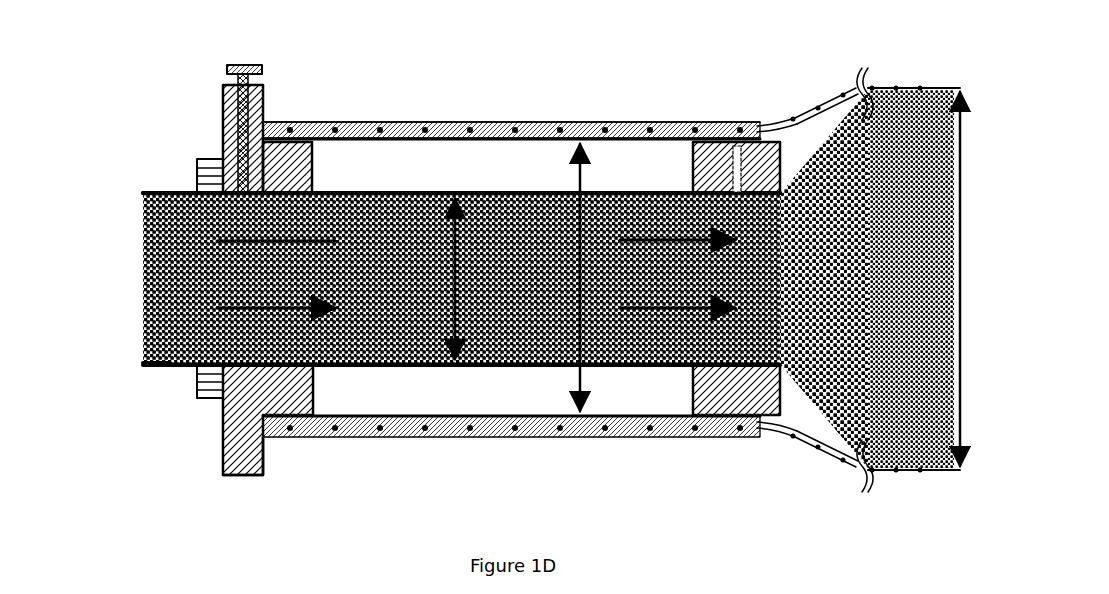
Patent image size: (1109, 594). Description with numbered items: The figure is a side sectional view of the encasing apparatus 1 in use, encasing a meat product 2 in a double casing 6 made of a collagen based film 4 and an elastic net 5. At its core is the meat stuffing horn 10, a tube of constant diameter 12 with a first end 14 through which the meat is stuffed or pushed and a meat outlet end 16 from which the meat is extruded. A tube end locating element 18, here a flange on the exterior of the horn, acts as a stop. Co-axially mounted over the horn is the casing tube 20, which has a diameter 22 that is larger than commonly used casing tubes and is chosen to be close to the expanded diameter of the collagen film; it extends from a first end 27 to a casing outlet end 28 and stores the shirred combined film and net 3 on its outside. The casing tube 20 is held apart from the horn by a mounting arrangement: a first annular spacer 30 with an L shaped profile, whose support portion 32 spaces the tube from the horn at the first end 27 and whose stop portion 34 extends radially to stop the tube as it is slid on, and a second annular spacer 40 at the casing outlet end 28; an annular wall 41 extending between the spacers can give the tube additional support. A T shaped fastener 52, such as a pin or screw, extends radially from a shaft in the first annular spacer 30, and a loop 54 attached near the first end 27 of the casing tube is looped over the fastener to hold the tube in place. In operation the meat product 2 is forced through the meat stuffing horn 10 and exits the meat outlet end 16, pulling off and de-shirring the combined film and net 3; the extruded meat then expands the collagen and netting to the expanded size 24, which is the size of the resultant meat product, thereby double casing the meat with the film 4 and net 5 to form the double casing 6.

The encasing apparatus 1 is at (138, 60).
The meat product 2 is at (140, 279).
The shirred combined film and net 3 is at (634, 119).
The film 4 is at (826, 103).
The net 5 is at (851, 84).
The double casing 6 is at (908, 82).
The meat stuffing horn 10 is at (364, 189).
The diameter of meat stuffing horn 12 is at (452, 299).
The first end of meat stuffing horn 14 is at (142, 370).
The meat outlet end 16 is at (780, 291).
The tube end locating element 18 is at (194, 170).
The casing tube 20 is at (556, 133).
The diameter of casing tube 22 is at (561, 277).
The expanded size of collagen 24 is at (973, 279).
The first end of casing tube 27 is at (277, 112).
The casing outlet end 28 is at (766, 120).
The first annular spacer 30 is at (218, 117).
The support portion 32 is at (321, 382).
The stop portion 34 is at (276, 439).
The second annular spacer 40 is at (688, 180).
The annular wall 41 is at (496, 143).
The T shaped fastener 52 is at (225, 63).
The loop 54 is at (266, 84).